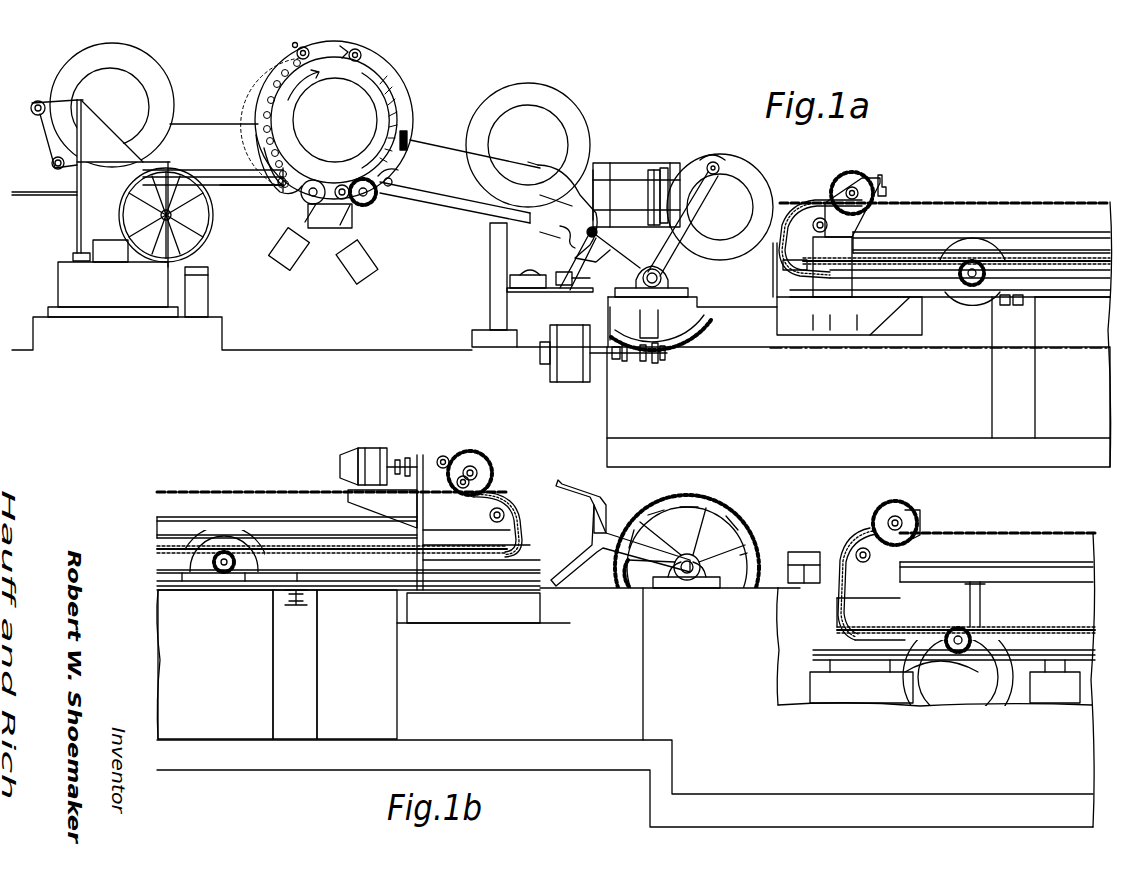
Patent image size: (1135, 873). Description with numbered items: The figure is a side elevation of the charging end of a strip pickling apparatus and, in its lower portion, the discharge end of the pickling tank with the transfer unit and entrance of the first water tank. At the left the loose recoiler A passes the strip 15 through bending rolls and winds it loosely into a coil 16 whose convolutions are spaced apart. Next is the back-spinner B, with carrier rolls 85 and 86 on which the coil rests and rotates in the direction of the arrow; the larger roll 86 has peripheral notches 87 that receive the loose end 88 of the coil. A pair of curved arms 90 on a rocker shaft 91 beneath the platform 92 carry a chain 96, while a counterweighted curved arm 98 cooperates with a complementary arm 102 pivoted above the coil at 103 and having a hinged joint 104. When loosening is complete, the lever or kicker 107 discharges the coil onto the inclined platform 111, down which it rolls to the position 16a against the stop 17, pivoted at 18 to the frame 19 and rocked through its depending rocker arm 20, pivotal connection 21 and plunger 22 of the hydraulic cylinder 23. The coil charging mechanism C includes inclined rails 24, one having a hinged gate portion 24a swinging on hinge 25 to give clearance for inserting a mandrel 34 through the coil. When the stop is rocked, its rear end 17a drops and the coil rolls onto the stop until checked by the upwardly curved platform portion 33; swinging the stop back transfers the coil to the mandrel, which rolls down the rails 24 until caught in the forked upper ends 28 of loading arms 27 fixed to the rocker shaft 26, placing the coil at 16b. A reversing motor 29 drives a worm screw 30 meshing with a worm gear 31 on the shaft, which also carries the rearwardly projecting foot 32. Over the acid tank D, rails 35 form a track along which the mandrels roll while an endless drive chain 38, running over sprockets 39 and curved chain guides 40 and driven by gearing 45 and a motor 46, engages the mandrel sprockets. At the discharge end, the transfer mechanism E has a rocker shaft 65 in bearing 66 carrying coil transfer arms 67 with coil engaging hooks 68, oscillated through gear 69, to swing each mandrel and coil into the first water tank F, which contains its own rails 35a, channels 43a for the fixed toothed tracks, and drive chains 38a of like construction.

In FIG. 1a, the strip 15 is at (42, 197).
In FIG. 1a, the coil 16 is at (152, 97).
In FIG. 1a, the coil 16a is at (552, 100).
In FIG. 1a, the coil 16b is at (770, 185).
In FIG. 1a, the stop 17 is at (573, 192).
In FIG. 1a, the depending rear end of stop 17a is at (540, 196).
In FIG. 1a, the pivot 18 is at (588, 232).
In FIG. 1a, the frame 19 is at (560, 237).
In FIG. 1a, the depending rocker arm 20 is at (583, 262).
In FIG. 1a, the pivotal connection 21 is at (562, 285).
In FIG. 1a, the plunger 22 is at (528, 288).
In FIG. 1a, the hydraulic cylinder 23 is at (507, 290).
In FIG. 1a, the inclined rails 24 is at (668, 170).
In FIG. 1a, the hinged rail portion (gate) 24a is at (620, 165).
In FIG. 1a, the hinge 25 is at (648, 200).
In FIG. 1a, the rocker shaft 26 is at (670, 278).
In FIG. 1a, the loading arms 27 is at (700, 212).
In FIG. 1a, the forked upper ends 28 is at (722, 165).
In FIG. 1a, the reversing motor 29 is at (575, 382).
In FIG. 1a, the worm screw 30 is at (648, 362).
In FIG. 1a, the worm gear 31 is at (692, 338).
In FIG. 1a, the rearwardly projecting foot 32 is at (613, 298).
In FIG. 1a, the platform portion 33 is at (618, 250).
In FIG. 1a, the mandrel 34 is at (716, 162).
In FIG. 1a, the rails 35 is at (957, 285).
In FIG. 1b, the rails 35a is at (925, 660).
In FIG. 1a, the endless drive chain 38 is at (970, 202).
In FIG. 1b, the endless drive chain 38 is at (294, 492).
In FIG. 1b, the drive chains 38a is at (1030, 628).
In FIG. 1a, the sprockets 39 is at (835, 208).
In FIG. 1b, the sprockets 39 is at (505, 497).
In FIG. 1a, the curved chain guides 40 is at (806, 222).
In FIG. 1b, the curved chain guides 40 is at (524, 530).
In FIG. 1b, the channels 43a is at (965, 650).
In FIG. 1a, the gearing 45 is at (852, 175).
In FIG. 1b, the gearing 45 is at (472, 462).
In FIG. 1b, the motor 46 is at (372, 452).
In FIG. 1b, the rocker shaft 65 is at (687, 580).
In FIG. 1b, the bearing 66 is at (682, 574).
In FIG. 1b, the coil transfer arms 67 is at (612, 560).
In FIG. 1b, the coil engaging hook 68 is at (590, 508).
In FIG. 1b, the gear 69 is at (752, 548).
In FIG. 1a, the carrier roll 85 is at (315, 180).
In FIG. 1a, the carrier roll 86 is at (372, 215).
In FIG. 1a, the notches 87 is at (370, 270).
In FIG. 1a, the loose end of coil 88 is at (393, 180).
In FIG. 1a, the curved arms 90 is at (256, 148).
In FIG. 1a, the rocker shaft 91 is at (280, 190).
In FIG. 1a, the platform 92 is at (247, 188).
In FIG. 1a, the chain 96 is at (264, 110).
In FIG. 1a, the curved arm 98 is at (408, 134).
In FIG. 1a, the complementary arm 102 is at (362, 57).
In FIG. 1a, the pivot 103 is at (296, 53).
In FIG. 1a, the hinged joint 104 is at (353, 60).
In FIG. 1a, the lever or kicker 107 is at (350, 186).
In FIG. 1a, the inclined platform 111 is at (440, 220).
In FIG. 1a, the loose recoiler A is at (72, 178).
In FIG. 1a, the back-spinner B is at (402, 85).
In FIG. 1a, the coil charging mechanism C is at (652, 163).
In FIG. 1a, the acid tank D is at (859, 334).
In FIG. 1b, the acid tank D is at (625, 708).
In FIG. 1b, the transfer mechanism E is at (710, 500).
In FIG. 1b, the first water tank F is at (936, 680).